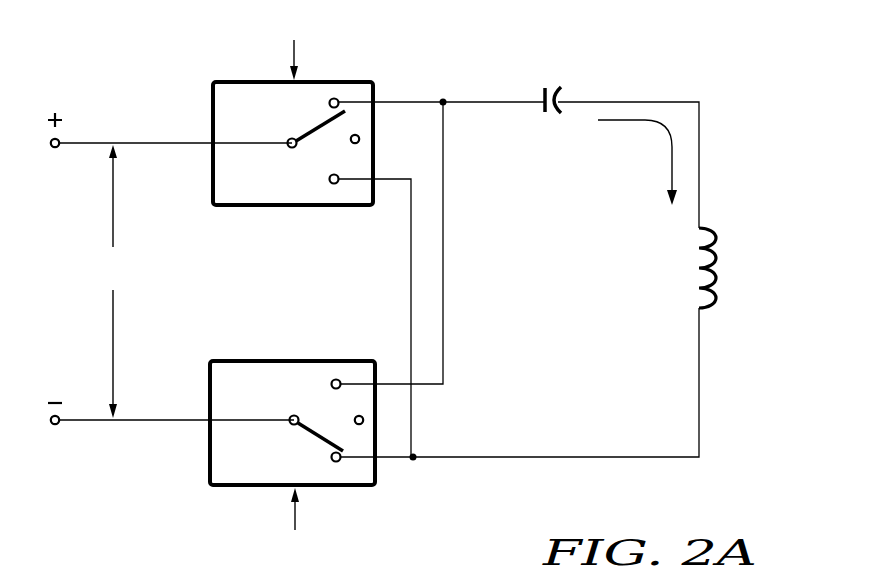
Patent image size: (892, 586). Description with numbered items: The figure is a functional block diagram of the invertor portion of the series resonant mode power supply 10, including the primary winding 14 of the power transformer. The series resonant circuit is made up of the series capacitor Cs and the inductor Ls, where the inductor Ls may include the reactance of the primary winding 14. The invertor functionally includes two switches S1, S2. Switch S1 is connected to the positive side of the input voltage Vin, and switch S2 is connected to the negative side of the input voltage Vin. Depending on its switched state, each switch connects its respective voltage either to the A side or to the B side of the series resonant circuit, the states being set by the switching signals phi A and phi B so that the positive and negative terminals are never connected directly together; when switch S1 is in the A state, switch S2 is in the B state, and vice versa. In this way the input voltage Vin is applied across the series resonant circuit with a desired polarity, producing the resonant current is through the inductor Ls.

The series resonant mode power supply 10 is at (150, 90).
The primary winding 14 is at (714, 242).
The switch S1 is at (313, 106).
The switch S2 is at (310, 464).
The series capacitor Cs is at (546, 87).
The inductor Ls is at (674, 265).
The input voltage Vin is at (112, 281).
The inductor current is is at (637, 162).